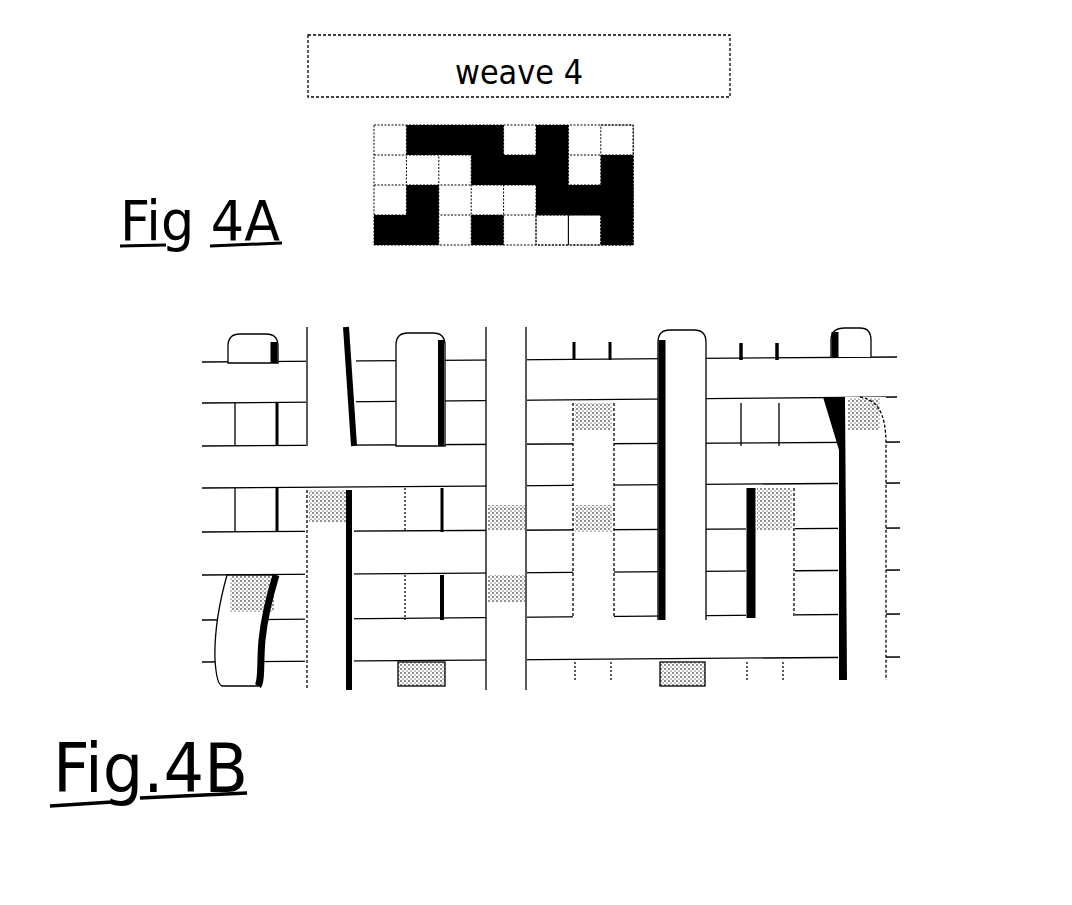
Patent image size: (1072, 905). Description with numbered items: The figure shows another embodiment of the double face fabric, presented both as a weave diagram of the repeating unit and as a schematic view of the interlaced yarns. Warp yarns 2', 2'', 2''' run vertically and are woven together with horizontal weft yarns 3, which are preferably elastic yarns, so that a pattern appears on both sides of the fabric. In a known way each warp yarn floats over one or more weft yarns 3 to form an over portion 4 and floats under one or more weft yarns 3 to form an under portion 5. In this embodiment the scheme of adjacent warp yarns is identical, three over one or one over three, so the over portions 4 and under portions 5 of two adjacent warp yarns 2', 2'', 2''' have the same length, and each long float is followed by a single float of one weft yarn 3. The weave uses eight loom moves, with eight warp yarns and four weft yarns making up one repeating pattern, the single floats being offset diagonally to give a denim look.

In FIG. 4A, the warp yarn 2' is at (641, 254).
In FIG. 4B, the warp yarn 2' is at (813, 298).
In FIG. 4A, the warp yarn 2'' is at (667, 183).
In FIG. 4B, the warp yarn 2'' is at (922, 504).
In FIG. 4A, the warp yarn 2''' is at (561, 272).
In FIG. 4B, the warp yarn 2''' is at (705, 559).
In FIG. 4B, the weft yarn 3 is at (897, 551).
In FIG. 4B, the over portion 4 is at (562, 606).
In FIG. 4B, the under portion 5 is at (605, 485).